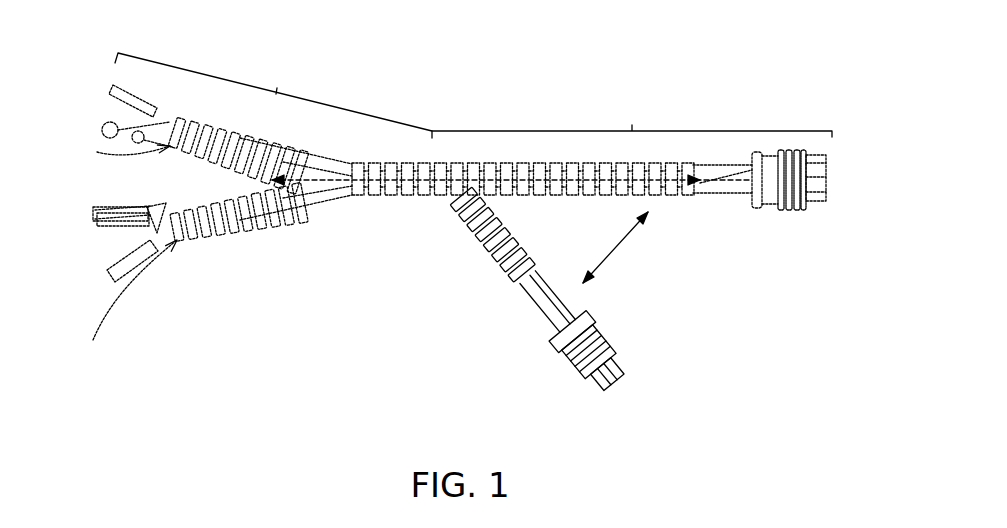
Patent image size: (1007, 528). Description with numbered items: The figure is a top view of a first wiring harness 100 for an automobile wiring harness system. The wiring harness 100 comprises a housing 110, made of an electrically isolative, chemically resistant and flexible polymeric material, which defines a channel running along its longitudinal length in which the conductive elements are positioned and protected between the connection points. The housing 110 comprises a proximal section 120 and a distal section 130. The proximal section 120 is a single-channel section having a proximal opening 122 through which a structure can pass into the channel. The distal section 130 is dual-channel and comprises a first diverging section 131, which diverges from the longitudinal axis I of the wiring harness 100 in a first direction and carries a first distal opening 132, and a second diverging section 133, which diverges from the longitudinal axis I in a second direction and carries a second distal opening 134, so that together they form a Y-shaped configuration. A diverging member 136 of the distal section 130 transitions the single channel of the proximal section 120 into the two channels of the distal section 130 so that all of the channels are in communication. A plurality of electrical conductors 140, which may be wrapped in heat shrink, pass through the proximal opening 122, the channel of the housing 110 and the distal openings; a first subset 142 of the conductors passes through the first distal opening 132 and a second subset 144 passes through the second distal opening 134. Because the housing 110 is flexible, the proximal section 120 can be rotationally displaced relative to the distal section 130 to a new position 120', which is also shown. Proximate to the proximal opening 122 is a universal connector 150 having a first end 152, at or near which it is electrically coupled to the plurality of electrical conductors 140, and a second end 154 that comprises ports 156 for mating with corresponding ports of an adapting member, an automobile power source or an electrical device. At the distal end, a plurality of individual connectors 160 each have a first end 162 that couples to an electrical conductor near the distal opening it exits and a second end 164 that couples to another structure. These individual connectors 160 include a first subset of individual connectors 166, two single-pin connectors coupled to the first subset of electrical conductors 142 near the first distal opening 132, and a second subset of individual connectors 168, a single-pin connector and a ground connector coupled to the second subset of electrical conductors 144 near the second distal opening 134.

The wiring harness 100 is at (783, 85).
The housing 110 is at (408, 188).
The proximal section 120 is at (632, 140).
The new position of proximal section 120' is at (545, 289).
The proximal opening 122 is at (697, 186).
The distal section 130 is at (273, 94).
The first diverging section 131 is at (203, 215).
The first distal opening 132 is at (124, 307).
The second diverging section 133 is at (264, 162).
The second distal opening 134 is at (145, 213).
The diverging member 136 is at (313, 188).
The plurality of electrical conductors 140 is at (717, 166).
The first subset of electrical conductors 142 is at (160, 230).
The second subset of electrical conductors 144 is at (237, 141).
The universal connector 150 is at (785, 203).
The first end 152 is at (741, 146).
The second end 154 is at (847, 202).
The ports 156 is at (817, 192).
The plurality of individual connectors 160 is at (170, 100).
The first end 162 is at (155, 135).
The second end 164 is at (148, 140).
The first subset of individual connectors 166 is at (133, 265).
The second subset of individual connectors 168 is at (152, 107).
The longitudinal axis I is at (362, 175).